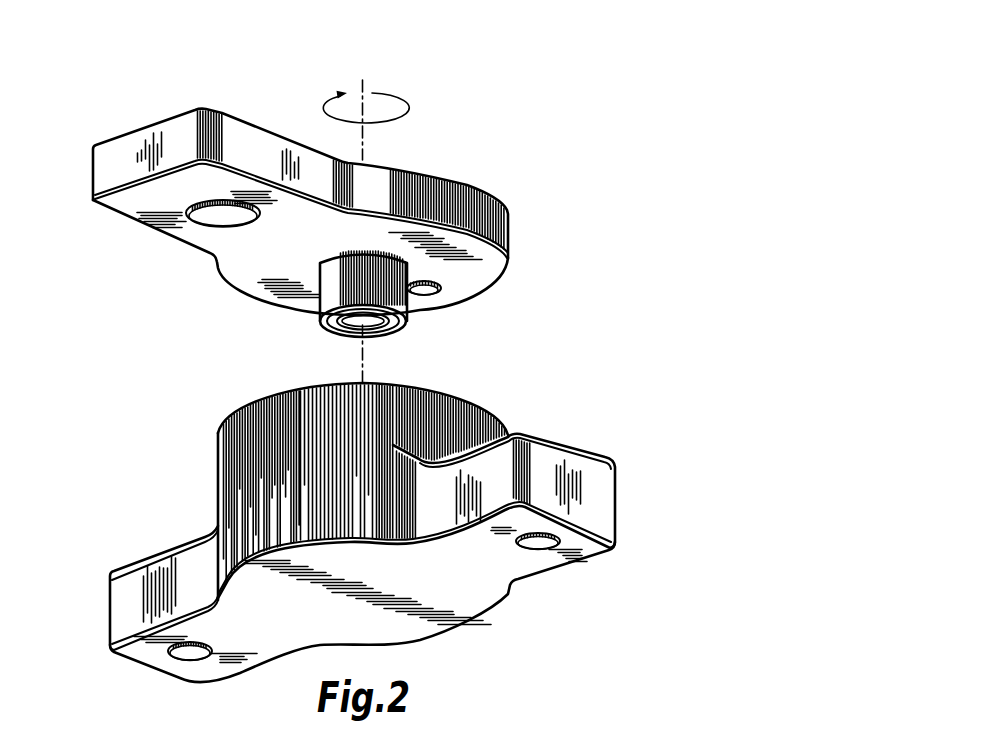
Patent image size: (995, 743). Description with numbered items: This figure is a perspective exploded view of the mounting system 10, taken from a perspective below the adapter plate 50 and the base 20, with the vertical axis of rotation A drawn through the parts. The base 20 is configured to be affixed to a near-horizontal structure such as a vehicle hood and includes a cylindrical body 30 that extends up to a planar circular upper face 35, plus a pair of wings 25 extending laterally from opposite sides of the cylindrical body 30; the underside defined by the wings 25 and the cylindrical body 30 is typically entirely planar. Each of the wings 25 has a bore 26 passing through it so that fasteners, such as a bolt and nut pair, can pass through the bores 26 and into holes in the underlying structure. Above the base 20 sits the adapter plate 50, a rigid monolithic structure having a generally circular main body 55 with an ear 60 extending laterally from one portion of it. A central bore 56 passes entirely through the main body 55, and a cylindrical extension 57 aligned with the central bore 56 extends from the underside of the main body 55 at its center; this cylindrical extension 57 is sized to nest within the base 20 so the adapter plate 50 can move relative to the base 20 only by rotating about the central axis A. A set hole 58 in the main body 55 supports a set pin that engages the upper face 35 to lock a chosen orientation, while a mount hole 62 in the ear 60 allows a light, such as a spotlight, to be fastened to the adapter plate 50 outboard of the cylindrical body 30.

The mounting system 10 is at (611, 314).
The base 20 is at (505, 630).
The wings 25 is at (607, 502).
The bores 26 is at (192, 650).
The cylindrical body 30 is at (235, 473).
The upper face 35 is at (272, 392).
The adapter plate 50 is at (512, 188).
The main body 55 is at (503, 228).
The central bore 56 is at (350, 187).
The cylindrical extension 57 is at (327, 300).
The set hole 58 is at (417, 290).
The ear 60 is at (170, 123).
The mount hole 62 is at (223, 215).
The rotation axis A is at (406, 109).